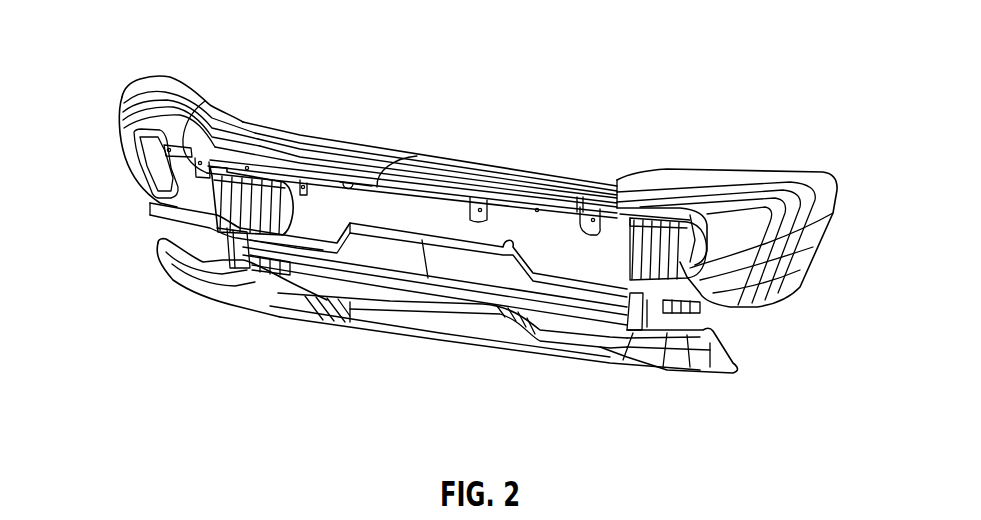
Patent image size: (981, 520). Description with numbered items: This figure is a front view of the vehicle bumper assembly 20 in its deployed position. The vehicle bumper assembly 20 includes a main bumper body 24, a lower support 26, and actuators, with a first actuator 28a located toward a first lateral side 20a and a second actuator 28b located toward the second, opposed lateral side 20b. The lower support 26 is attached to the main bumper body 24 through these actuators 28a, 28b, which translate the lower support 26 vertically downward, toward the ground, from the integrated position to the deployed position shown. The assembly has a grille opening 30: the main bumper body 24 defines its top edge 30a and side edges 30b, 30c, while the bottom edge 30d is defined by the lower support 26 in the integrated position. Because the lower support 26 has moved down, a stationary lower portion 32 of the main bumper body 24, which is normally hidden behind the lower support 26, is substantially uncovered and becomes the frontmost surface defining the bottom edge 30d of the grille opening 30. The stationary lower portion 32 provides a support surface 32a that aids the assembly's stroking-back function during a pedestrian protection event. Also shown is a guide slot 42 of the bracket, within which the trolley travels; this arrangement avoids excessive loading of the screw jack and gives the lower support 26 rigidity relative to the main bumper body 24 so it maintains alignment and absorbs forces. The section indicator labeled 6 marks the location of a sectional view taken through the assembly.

The vehicle bumper assembly 20 is at (112, 53).
The first lateral side 20a is at (808, 245).
The second lateral side 20b is at (116, 130).
The main bumper body 24 is at (132, 173).
The lower support 26 is at (497, 351).
The first actuator 28a is at (613, 277).
The second actuator 28b is at (285, 198).
The grille opening 30 is at (440, 216).
The top edge 30a is at (357, 184).
The side edge 30b is at (178, 195).
The side edge 30c is at (686, 220).
The bottom edge 30d is at (455, 255).
The stationary lower portion 32 is at (508, 245).
The support surface 32a is at (286, 245).
The guide slot 42 is at (613, 277).
The section line 6 is at (740, 168).